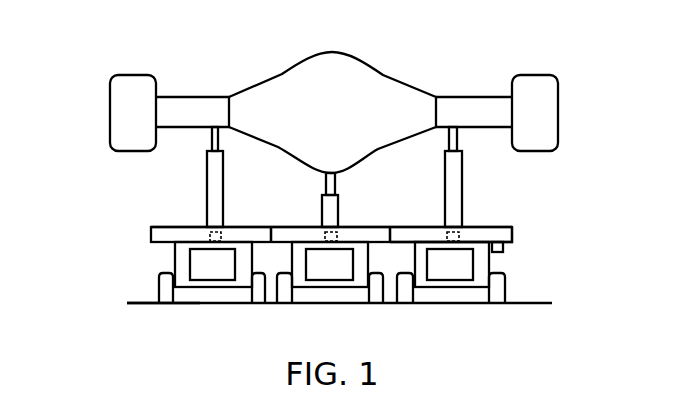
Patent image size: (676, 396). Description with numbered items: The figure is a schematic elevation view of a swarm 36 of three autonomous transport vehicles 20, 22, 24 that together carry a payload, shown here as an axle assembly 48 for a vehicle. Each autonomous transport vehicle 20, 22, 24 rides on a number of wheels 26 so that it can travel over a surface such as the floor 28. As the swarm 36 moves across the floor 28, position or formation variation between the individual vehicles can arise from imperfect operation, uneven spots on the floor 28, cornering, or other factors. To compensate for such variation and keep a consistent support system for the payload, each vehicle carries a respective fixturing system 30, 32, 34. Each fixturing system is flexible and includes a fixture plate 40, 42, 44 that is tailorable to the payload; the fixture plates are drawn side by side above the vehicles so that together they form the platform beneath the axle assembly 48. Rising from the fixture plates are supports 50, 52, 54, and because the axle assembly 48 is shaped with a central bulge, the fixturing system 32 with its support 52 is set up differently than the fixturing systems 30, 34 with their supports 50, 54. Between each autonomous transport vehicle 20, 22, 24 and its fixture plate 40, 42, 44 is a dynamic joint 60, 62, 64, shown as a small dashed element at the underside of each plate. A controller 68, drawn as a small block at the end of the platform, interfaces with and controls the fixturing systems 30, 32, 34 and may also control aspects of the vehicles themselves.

The autonomous transport vehicle 20 is at (213, 288).
The autonomous transport vehicle 22 is at (320, 288).
The autonomous transport vehicle 24 is at (456, 288).
The wheels 26 is at (403, 305).
The floor 28 is at (143, 302).
The fixturing system 30 is at (143, 232).
The fixturing system 32 is at (316, 223).
The fixturing system 34 is at (517, 233).
The swarm 36 is at (95, 247).
The fixture plate 40 is at (168, 227).
The fixture plate 42 is at (293, 227).
The fixture plate 44 is at (430, 227).
The axle assembly 48 is at (354, 56).
The support 50 is at (205, 190).
The support 52 is at (345, 200).
The support 54 is at (465, 197).
The joint 60 is at (222, 232).
The joint 62 is at (338, 236).
The joint 64 is at (463, 234).
The controller 68 is at (503, 250).